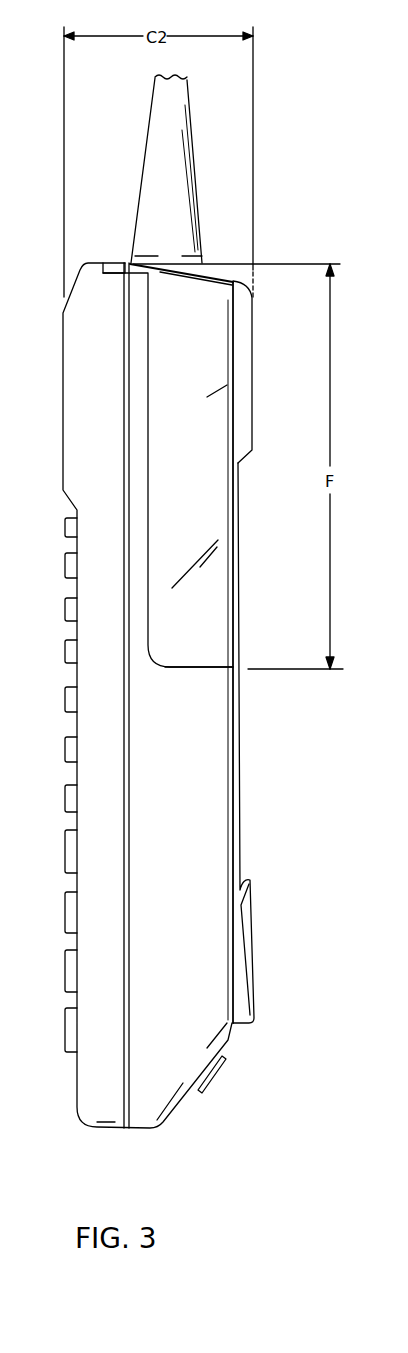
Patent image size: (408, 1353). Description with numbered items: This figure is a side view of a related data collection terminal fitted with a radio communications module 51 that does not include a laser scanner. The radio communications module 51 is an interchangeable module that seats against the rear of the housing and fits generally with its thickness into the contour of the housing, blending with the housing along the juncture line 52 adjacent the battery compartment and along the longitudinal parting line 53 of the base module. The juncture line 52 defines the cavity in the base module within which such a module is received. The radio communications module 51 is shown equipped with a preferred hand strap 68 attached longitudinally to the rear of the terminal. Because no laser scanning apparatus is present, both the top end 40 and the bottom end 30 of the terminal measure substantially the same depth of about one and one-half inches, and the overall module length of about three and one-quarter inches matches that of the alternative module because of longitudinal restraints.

The bottom end 30 is at (148, 1130).
The top end 40 is at (118, 263).
The radio communications module 51 is at (208, 397).
The juncture line 52 is at (173, 665).
The longitudinal parting line 53 is at (124, 442).
The hand strap 68 is at (243, 747).